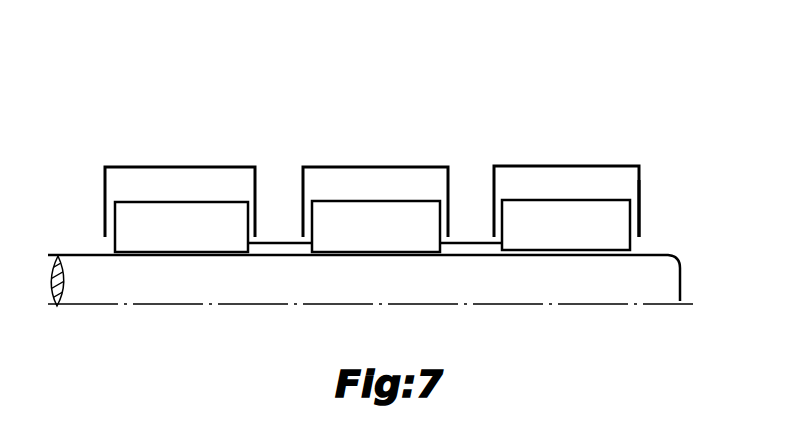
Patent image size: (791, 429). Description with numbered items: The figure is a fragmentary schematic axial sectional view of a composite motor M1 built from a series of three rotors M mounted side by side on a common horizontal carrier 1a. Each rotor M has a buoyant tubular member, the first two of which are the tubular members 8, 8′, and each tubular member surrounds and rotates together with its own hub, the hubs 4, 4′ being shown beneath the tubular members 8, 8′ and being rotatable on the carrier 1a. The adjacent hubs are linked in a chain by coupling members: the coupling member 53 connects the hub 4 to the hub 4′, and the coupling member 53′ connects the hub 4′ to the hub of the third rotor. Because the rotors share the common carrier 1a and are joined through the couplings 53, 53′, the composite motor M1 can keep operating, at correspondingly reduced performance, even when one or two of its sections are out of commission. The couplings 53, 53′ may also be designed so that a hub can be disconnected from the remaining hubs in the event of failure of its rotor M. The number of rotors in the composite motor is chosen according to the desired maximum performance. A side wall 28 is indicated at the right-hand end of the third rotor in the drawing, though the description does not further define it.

The common horizontal carrier 1a is at (610, 303).
The buoyant tubular member 8 is at (162, 166).
The buoyant tubular member 8′ is at (373, 165).
The hub 4 is at (188, 235).
The hub 4′ is at (388, 236).
The coupling member 53 is at (280, 247).
The coupling member 53′ is at (472, 247).
The side wall 28 is at (640, 178).
The rotor M is at (222, 163).
The module arrangement M1 is at (387, 90).